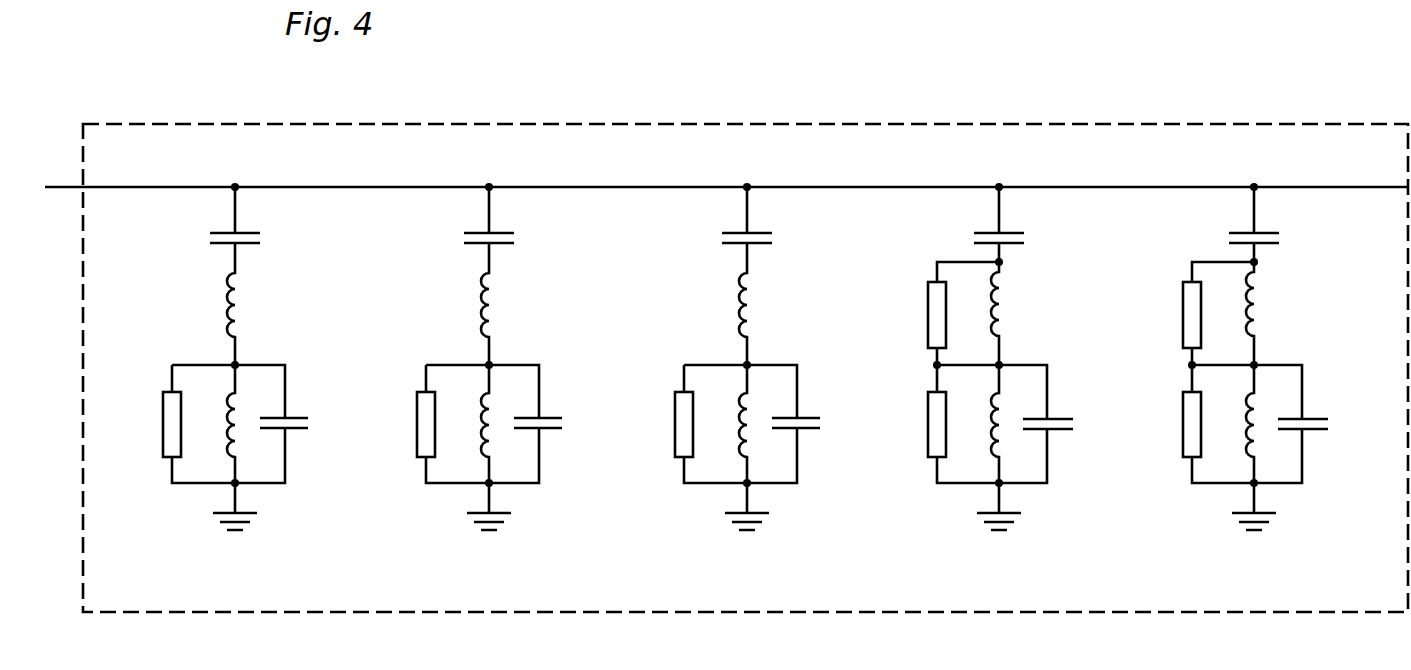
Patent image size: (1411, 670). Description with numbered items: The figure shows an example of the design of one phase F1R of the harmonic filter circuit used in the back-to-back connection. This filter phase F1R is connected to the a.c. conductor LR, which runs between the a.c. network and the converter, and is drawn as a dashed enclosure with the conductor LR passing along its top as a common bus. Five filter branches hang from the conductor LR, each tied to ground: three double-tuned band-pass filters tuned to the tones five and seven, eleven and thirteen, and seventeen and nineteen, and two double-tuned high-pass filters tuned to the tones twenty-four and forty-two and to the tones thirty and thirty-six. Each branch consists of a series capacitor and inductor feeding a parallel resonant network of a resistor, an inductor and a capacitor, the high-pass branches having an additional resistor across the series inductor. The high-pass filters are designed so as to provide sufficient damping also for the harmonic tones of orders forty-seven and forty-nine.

The a.c. conductor LR is at (657, 187).
The phase of the filter circuit F1R is at (170, 592).